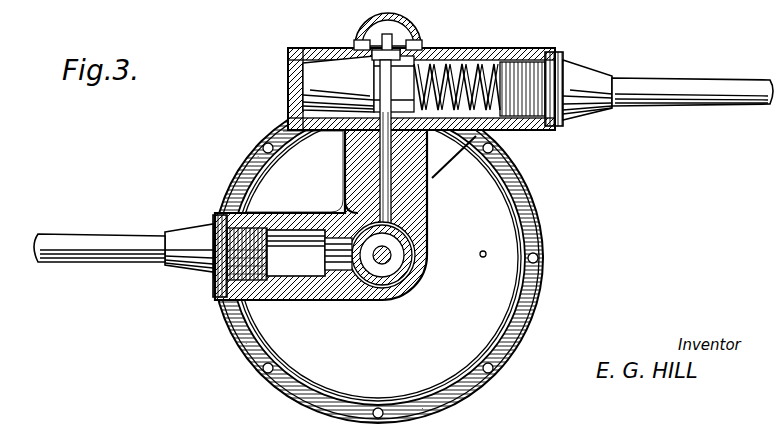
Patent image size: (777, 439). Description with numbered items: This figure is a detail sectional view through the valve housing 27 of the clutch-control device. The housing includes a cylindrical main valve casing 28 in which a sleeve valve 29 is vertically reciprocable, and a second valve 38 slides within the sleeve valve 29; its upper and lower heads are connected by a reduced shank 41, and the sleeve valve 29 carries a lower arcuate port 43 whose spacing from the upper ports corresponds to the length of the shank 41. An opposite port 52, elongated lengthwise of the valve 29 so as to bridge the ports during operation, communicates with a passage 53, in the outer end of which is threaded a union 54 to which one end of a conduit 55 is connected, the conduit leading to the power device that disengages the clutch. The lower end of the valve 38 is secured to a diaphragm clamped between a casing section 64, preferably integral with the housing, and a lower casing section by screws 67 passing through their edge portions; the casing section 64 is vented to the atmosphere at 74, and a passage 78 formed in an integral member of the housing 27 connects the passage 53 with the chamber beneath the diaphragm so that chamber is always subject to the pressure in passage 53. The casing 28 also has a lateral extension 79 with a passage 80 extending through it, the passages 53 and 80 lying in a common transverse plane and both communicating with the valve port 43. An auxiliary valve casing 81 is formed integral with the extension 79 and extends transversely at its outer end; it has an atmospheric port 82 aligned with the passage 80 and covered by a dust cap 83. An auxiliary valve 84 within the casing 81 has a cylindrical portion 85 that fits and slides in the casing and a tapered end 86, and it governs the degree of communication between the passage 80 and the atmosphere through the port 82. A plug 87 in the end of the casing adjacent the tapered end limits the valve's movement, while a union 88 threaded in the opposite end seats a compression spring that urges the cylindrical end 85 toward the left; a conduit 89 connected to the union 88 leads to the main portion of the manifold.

The valve housing 27 is at (538, 211).
The main valve casing 28 is at (422, 296).
The sleeve valve 29 is at (410, 258).
The second valve 38 is at (410, 248).
The reduced shank 41 is at (382, 265).
The lower arcuate port 43 is at (358, 300).
The opposite port 52 is at (322, 300).
The passage 53 is at (286, 212).
The union 54 is at (170, 232).
The conduit 55 is at (108, 234).
The casing section 64 is at (540, 314).
The screws 67 is at (540, 260).
The vent 74 is at (480, 251).
The passage 78 is at (272, 254).
The lateral extension 79 is at (420, 196).
The passage 80 is at (414, 180).
The auxiliary valve casing 81 is at (470, 58).
The atmospheric port 82 is at (392, 52).
The dust cap 83 is at (386, 28).
The auxiliary valve 84 is at (320, 62).
The cylindrical portion 85 is at (408, 72).
The tapered end 86 is at (288, 77).
The plug 87 is at (285, 68).
The union 88 is at (578, 68).
The conduit 89 is at (665, 80).